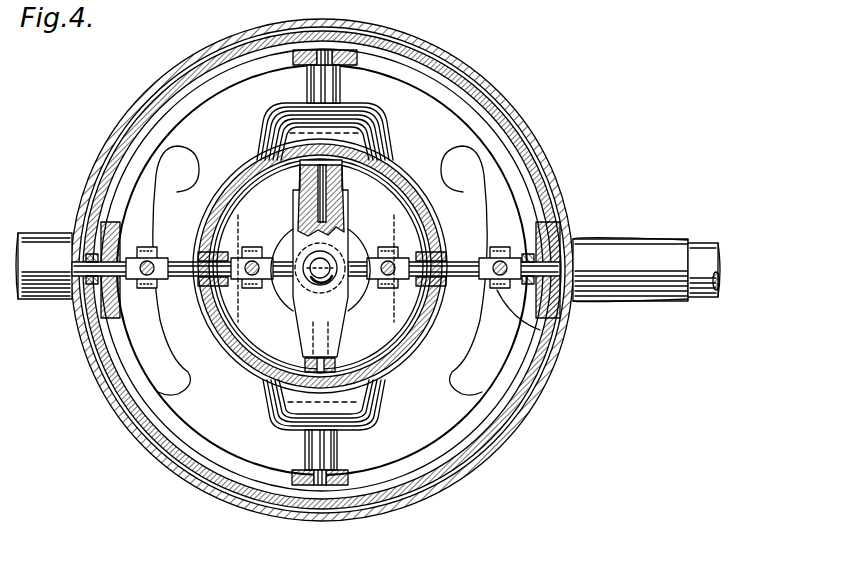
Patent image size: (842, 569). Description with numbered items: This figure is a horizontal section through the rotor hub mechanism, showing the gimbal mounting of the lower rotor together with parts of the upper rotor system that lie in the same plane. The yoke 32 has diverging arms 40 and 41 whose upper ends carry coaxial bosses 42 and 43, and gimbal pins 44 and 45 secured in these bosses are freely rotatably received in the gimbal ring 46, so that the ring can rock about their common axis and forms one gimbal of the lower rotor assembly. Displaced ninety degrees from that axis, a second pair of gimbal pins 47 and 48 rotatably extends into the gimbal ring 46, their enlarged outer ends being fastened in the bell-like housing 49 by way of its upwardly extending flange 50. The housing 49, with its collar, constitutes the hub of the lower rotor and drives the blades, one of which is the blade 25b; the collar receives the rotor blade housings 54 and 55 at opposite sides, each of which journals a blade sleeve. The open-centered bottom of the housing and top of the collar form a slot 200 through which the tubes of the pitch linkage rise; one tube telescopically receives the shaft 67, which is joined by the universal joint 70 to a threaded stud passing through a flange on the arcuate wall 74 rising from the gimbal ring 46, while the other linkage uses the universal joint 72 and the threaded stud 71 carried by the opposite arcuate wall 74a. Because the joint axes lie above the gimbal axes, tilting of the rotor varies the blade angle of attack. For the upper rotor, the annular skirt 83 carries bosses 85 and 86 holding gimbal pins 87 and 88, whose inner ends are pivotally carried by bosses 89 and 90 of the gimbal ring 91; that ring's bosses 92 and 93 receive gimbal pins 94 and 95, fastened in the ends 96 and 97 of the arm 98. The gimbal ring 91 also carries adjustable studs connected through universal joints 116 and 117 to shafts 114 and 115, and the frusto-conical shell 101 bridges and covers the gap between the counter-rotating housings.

The rotor blade 25b is at (713, 243).
The yoke 32 is at (406, 153).
The arm 40 is at (386, 133).
The arm 41 is at (384, 403).
The boss 42 is at (342, 92).
The boss 43 is at (338, 443).
The gimbal pin 44 is at (348, 70).
The gimbal pin 45 is at (338, 462).
The gimbal ring 46 is at (296, 65).
The gimbal pin 47 is at (128, 246).
The gimbal pin 48 is at (520, 250).
The bell-like housing 49 is at (548, 335).
The upwardly extending flange 50 is at (572, 244).
The rotor blade housing 54 is at (42, 305).
The rotor blade housing 55 is at (667, 240).
The shaft 67 is at (150, 262).
The universal joint 70 is at (112, 292).
The threaded stud 71 is at (552, 314).
The universal joint 72 is at (486, 290).
The arcuate wall 74 is at (138, 284).
The arcuate wall 74a is at (520, 330).
The annular skirt 83 is at (424, 200).
The boss 85 is at (210, 322).
The boss 86 is at (440, 255).
The gimbal pin 87 is at (204, 285).
The gimbal pin 88 is at (480, 284).
The boss 89 is at (240, 298).
The boss 90 is at (412, 256).
The gimbal ring 91 is at (386, 332).
The boss 92 is at (276, 360).
The boss 93 is at (268, 240).
The gimbal pin 94 is at (322, 372).
The gimbal pin 95 is at (325, 165).
The end of arm 96 is at (333, 333).
The end of arm 97 is at (338, 200).
The arm 98 is at (352, 252).
The frusto-conical shell 101 is at (540, 358).
The shaft 114 is at (502, 300).
The shaft 115 is at (252, 262).
The universal joint 116 is at (360, 298).
The universal joint 117 is at (264, 254).
The slot 200 is at (196, 158).